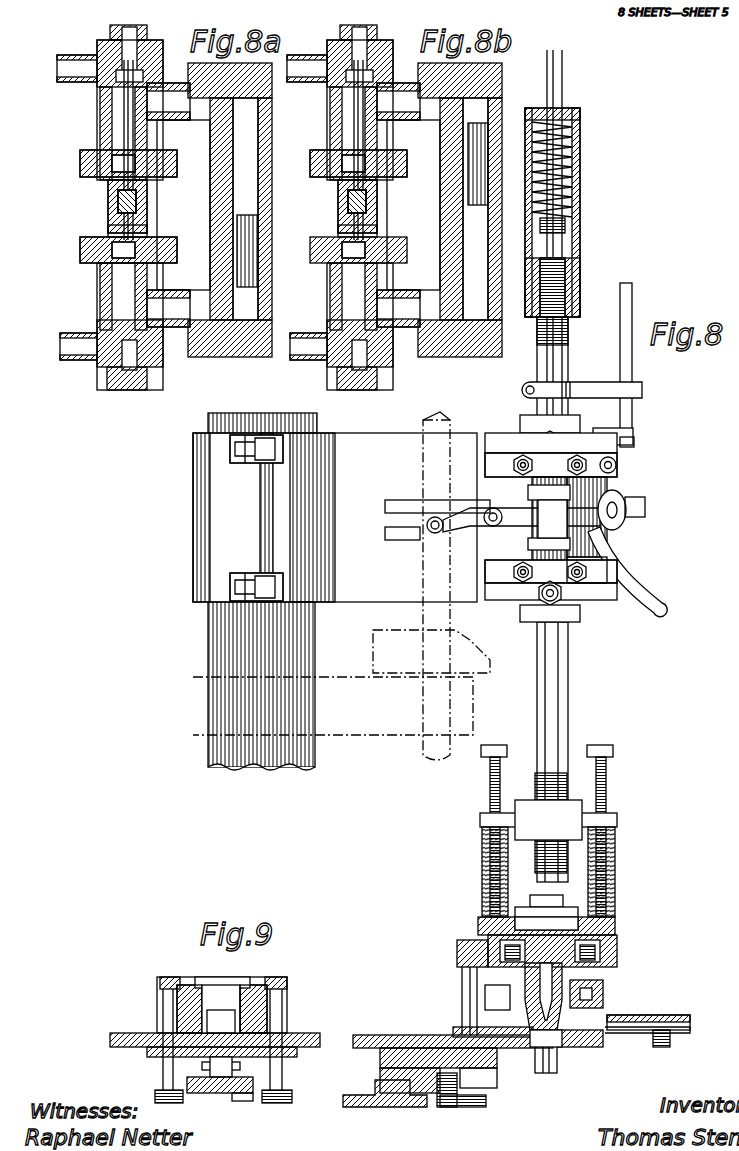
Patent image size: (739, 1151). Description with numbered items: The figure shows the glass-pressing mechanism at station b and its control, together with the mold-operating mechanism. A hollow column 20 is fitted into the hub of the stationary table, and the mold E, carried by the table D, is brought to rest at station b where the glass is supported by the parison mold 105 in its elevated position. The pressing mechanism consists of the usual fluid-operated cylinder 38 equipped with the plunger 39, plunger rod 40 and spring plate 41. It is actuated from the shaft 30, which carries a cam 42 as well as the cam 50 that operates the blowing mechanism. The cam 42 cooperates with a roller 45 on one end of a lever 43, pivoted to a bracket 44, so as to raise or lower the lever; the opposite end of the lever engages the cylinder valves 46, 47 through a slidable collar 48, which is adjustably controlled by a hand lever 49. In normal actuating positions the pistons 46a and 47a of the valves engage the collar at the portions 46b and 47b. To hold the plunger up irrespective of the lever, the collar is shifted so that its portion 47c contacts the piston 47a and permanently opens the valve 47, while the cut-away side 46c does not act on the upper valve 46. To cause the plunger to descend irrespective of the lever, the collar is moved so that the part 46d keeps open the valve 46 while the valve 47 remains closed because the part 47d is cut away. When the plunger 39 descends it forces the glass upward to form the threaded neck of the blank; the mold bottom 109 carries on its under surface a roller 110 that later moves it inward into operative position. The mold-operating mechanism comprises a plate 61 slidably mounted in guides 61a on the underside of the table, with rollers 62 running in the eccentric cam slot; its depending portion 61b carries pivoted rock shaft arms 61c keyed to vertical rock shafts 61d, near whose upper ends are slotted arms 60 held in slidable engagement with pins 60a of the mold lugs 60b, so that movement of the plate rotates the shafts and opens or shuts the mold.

In FIG. 8, the hollow column 20 is at (243, 418).
In FIG. 8, the shaft 30 is at (448, 420).
In FIG. 8, the fluid-operated cylinder 38 is at (613, 533).
In FIG. 8, the plunger 39 is at (538, 1050).
In FIG. 8, the plunger rod 40 is at (552, 360).
In FIG. 8, the spring plate 41 is at (607, 930).
In FIG. 8, the cam 42 is at (400, 498).
In FIG. 8A, the lever 43 is at (108, 210).
In FIG. 8B, the lever 43 is at (377, 212).
In FIG. 8, the lever 43 is at (645, 506).
In FIG. 8, the bracket 44 is at (480, 540).
In FIG. 8, the roller 45 is at (430, 530).
In FIG. 8A, the upper cylinder valve 46 is at (100, 118).
In FIG. 8B, the upper cylinder valve 46 is at (330, 118).
In FIG. 8, the upper cylinder valve 46 is at (613, 483).
In FIG. 8A, the piston of upper valve 46a is at (147, 183).
In FIG. 8B, the piston of upper valve 46a is at (377, 183).
In FIG. 8, the piston of upper valve 46a is at (600, 483).
In FIG. 8, the collar portion 46b is at (610, 497).
In FIG. 8B, the cut-away side of collar 46c is at (345, 183).
In FIG. 8, the cut-away side of collar 46c is at (530, 510).
In FIG. 8A, the collar part 46d is at (120, 177).
In FIG. 8A, the lower cylinder valve 47 is at (100, 295).
In FIG. 8B, the lower cylinder valve 47 is at (330, 297).
In FIG. 8, the lower cylinder valve 47 is at (533, 587).
In FIG. 8A, the piston of lower valve 47a is at (140, 228).
In FIG. 8B, the piston of lower valve 47a is at (377, 230).
In FIG. 8, the collar portion 47b is at (582, 563).
In FIG. 8A, the collar portion 47c is at (108, 233).
In FIG. 8B, the collar portion 47c is at (338, 233).
In FIG. 8, the collar portion 47c is at (532, 545).
In FIG. 8A, the cut-away collar part 47d is at (108, 228).
In FIG. 8, the cut-away collar part 47d is at (617, 558).
In FIG. 8A, the slidable collar 48 is at (140, 203).
In FIG. 8B, the slidable collar 48 is at (377, 205).
In FIG. 8, the slidable collar 48 is at (552, 519).
In FIG. 8, the hand lever 49 is at (655, 592).
In FIG. 8, the cam 50 is at (388, 648).
In FIG. 9, the arms 60 is at (282, 983).
In FIG. 9, the pins 60a is at (185, 990).
In FIG. 9, the mold lugs 60b is at (200, 985).
In FIG. 8, the plate 61 is at (425, 1092).
In FIG. 9, the plate 61 is at (222, 1093).
In FIG. 8, the guides 61a is at (395, 1058).
In FIG. 9, the guides 61a is at (298, 1057).
In FIG. 8, the depending portion 61b is at (453, 1110).
In FIG. 9, the depending portion 61b is at (165, 1092).
In FIG. 8, the rock shaft arms 61c is at (470, 1107).
In FIG. 9, the rock shaft arms 61c is at (250, 1100).
In FIG. 8, the rock shaft 61d is at (478, 1078).
In FIG. 9, the rock shaft 61d is at (290, 1090).
In FIG. 8, the rollers 62 is at (385, 1107).
In FIG. 8, the parison mold 105 is at (565, 1045).
In FIG. 8, the mold bottom 109 is at (672, 1022).
In FIG. 8, the roller 110 is at (660, 1047).
In FIG. 8, the table D is at (422, 1035).
In FIG. 9, the table D is at (118, 1033).
In FIG. 8, the mold E is at (605, 1000).
In FIG. 9, the mold E is at (255, 985).
In FIG. 8, the pressing station b is at (657, 1035).